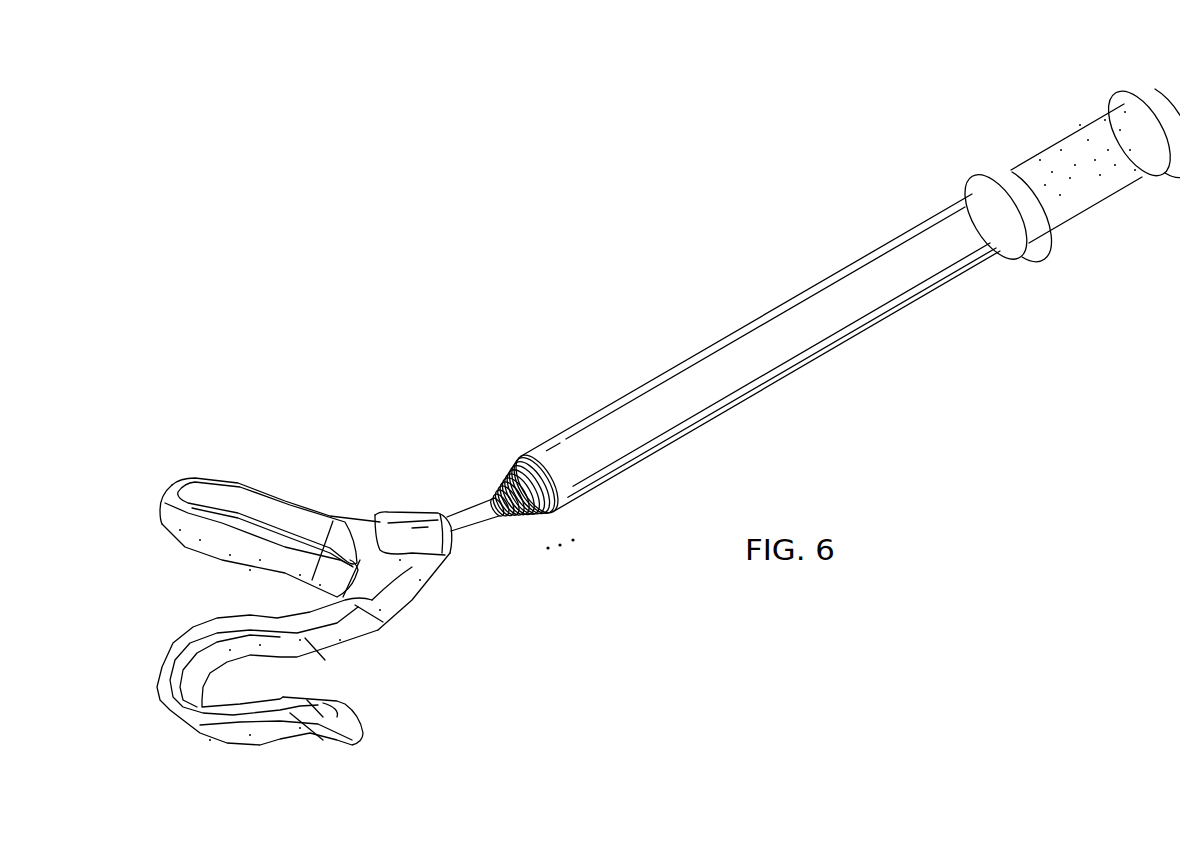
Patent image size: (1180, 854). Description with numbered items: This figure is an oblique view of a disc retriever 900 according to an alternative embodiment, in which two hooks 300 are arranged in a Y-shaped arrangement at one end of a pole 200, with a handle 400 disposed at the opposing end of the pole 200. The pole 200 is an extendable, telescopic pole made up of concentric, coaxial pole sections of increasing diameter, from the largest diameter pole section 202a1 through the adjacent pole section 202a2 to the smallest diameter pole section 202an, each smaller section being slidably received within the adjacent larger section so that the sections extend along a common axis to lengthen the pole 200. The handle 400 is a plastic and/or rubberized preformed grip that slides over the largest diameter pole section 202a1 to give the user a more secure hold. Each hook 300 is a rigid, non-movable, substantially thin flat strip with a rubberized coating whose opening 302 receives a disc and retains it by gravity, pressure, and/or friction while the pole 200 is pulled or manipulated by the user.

The disc retriever 900 is at (318, 317).
The handle 400 is at (1054, 136).
The pole 200 is at (747, 328).
The largest diameter pole section 202a1 is at (618, 474).
The pole section 202a2 is at (546, 520).
The smallest diameter pole section 202an is at (467, 528).
The opening 302 is at (344, 685).
The hook 300 is at (208, 478).